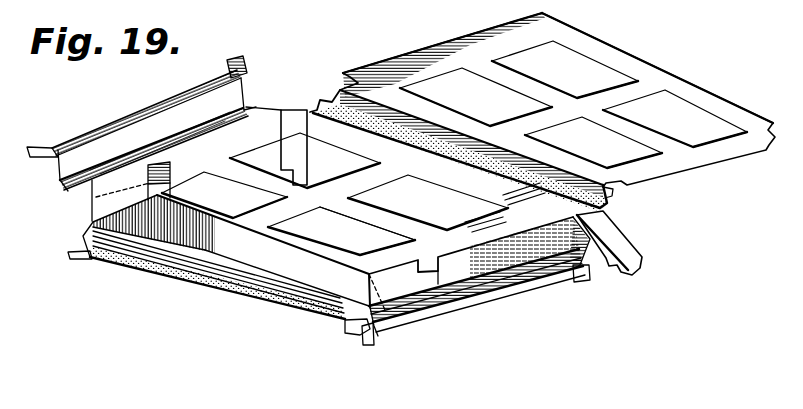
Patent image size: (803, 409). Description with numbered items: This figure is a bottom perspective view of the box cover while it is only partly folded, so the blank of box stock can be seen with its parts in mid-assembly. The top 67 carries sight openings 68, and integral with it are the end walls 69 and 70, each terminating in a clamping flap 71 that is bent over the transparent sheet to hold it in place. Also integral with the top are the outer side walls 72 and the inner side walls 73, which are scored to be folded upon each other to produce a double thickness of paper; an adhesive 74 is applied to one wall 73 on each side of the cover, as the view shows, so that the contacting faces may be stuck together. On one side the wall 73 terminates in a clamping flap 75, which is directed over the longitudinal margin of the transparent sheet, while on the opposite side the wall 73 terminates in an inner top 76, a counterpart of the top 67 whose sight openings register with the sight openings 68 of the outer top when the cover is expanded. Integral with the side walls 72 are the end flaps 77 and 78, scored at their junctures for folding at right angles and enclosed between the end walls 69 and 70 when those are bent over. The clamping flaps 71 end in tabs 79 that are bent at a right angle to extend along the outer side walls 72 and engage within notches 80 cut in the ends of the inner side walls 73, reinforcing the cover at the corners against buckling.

The top 67 is at (358, 212).
The sight openings 68 is at (290, 218).
The end wall 69 is at (253, 110).
The end wall 70 is at (242, 83).
The clamping flaps 71 is at (178, 100).
The side walls 72 is at (443, 163).
The side walls 73 is at (547, 177).
The adhesive 74 is at (603, 187).
The clamping flap 75 is at (147, 276).
The inner top 76 is at (641, 69).
The end flap 77 is at (298, 120).
The end flap 78 is at (90, 193).
The tabs 79 is at (245, 60).
The notches 80 is at (330, 80).